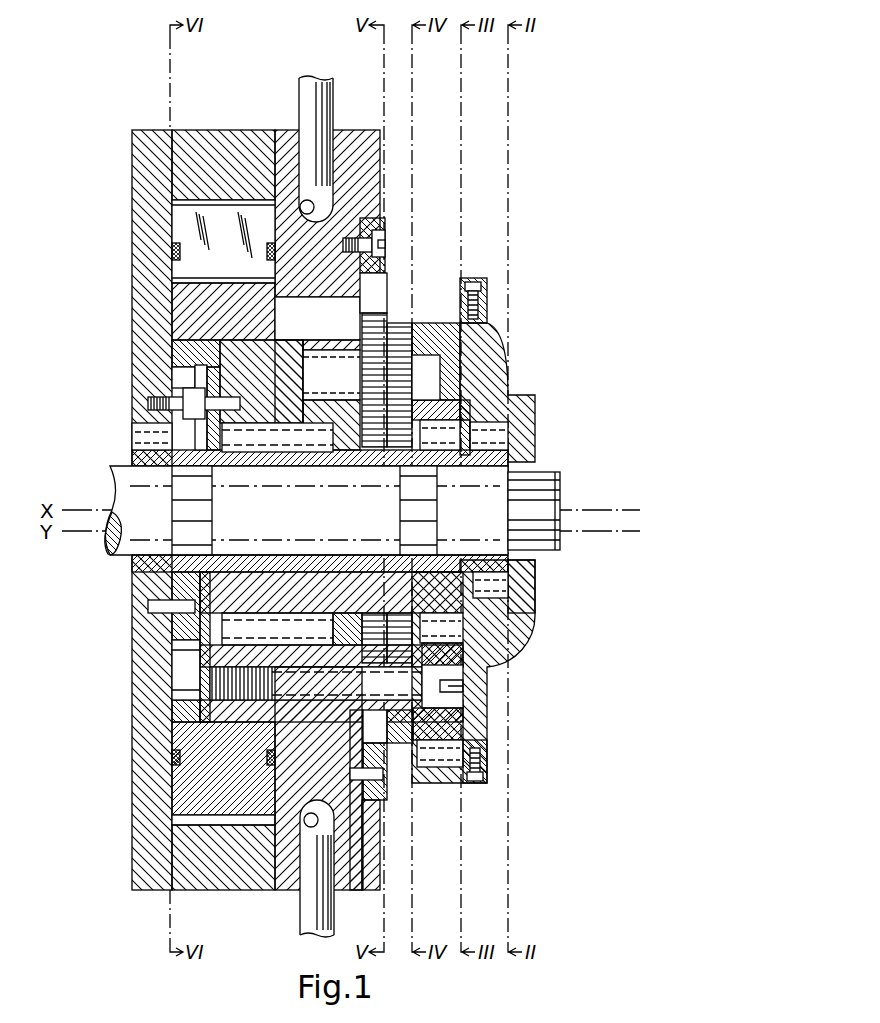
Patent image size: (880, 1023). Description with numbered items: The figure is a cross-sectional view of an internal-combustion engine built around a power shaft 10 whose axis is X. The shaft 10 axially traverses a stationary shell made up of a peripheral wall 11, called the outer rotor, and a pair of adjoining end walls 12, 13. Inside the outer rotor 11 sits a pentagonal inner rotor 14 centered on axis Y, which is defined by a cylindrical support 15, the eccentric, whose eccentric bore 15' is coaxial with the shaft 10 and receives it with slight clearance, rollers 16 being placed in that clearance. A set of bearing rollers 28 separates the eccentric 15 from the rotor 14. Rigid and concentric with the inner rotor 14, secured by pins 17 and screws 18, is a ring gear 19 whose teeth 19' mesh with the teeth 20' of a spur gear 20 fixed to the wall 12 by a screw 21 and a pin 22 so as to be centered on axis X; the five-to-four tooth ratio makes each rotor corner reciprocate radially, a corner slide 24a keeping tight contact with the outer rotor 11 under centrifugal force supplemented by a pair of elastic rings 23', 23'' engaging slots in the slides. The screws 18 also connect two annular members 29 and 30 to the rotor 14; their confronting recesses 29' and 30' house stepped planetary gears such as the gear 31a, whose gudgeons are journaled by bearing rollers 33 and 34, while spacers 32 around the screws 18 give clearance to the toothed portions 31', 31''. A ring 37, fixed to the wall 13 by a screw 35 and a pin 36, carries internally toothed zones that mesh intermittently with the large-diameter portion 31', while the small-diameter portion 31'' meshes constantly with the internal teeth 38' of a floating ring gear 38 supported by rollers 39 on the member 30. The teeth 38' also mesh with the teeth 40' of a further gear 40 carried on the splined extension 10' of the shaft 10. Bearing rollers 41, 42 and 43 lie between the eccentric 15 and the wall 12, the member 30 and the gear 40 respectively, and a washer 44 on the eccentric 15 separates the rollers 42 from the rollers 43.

The power shaft 10 is at (268, 508).
The splined extension 10' is at (568, 511).
The peripheral wall (outer rotor) 11 is at (197, 137).
The end wall 12 is at (137, 172).
The end wall 13 is at (352, 137).
The inner rotor 14 is at (182, 790).
The cylindrical support (eccentric) 15 is at (544, 586).
The eccentric bore 15' is at (100, 559).
The rollers 16 is at (205, 482).
The pins 17 is at (261, 381).
The screws 18 is at (223, 768).
The ring gear 19 is at (249, 717).
The teeth of ring gear 19' is at (143, 649).
The spur gear 20 is at (149, 399).
The teeth of spur gear 20' is at (142, 670).
The screw 21 is at (150, 403).
The pin 22 is at (150, 608).
The elastic ring 23' is at (133, 253).
The elastic ring 23'' is at (296, 261).
The slide 24a is at (240, 217).
The bearing rollers 28 is at (280, 455).
The annular member 29 is at (344, 778).
The recess 29' is at (317, 373).
The annular member 30 is at (483, 724).
The recess 30' is at (474, 371).
The large-diameter toothed portion 31' is at (414, 324).
The small-diameter toothed portion 31'' is at (434, 344).
The planetary gear 31a is at (429, 385).
The spacers 32 is at (376, 614).
The bearing rollers 33 is at (300, 404).
The bearing rollers 34 is at (470, 410).
The screw 35 is at (386, 243).
The pin 36 is at (390, 803).
The ring 37 is at (383, 220).
The floating ring gear 38 is at (495, 784).
The internal teeth 38' is at (440, 782).
The rollers 39 is at (470, 282).
The gear 40 is at (507, 671).
The teeth of gear 40' is at (504, 686).
The bearing rollers 41 is at (140, 436).
The bearing rollers 42 is at (447, 452).
The bearing rollers 43 is at (492, 437).
The washer 44 is at (497, 633).